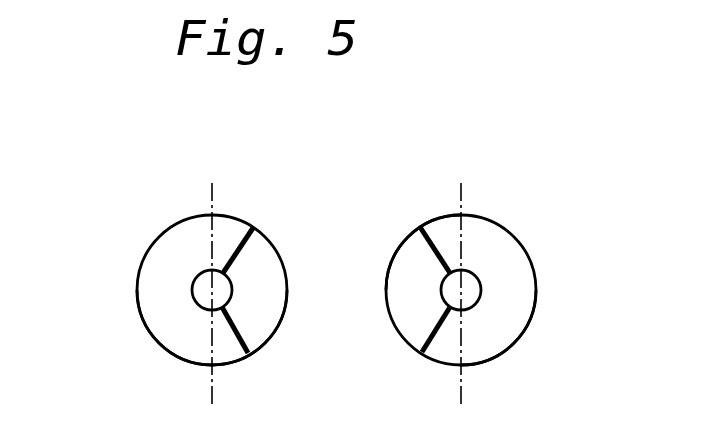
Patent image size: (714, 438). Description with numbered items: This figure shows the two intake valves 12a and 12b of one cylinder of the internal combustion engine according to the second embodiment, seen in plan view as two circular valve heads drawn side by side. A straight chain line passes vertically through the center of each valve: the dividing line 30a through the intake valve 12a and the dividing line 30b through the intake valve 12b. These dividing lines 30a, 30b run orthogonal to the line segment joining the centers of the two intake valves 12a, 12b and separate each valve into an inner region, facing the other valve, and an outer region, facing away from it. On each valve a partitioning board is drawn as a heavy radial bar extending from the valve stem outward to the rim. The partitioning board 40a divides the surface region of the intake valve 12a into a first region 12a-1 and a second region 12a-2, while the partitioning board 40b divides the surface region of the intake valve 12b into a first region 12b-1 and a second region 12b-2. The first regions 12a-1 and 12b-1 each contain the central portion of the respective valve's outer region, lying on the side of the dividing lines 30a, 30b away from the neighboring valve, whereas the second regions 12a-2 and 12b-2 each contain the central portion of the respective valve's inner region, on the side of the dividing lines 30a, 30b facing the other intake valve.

The intake valve 12a is at (168, 285).
The first region 12a-1 is at (167, 323).
The second region 12a-2 is at (260, 315).
The intake valve 12b is at (505, 285).
The first region 12b-1 is at (507, 323).
The second region 12b-2 is at (411, 266).
The dividing line 30a is at (211, 198).
The dividing line 30b is at (461, 198).
The partitioning board 40a is at (253, 229).
The partitioning board 40b is at (420, 226).